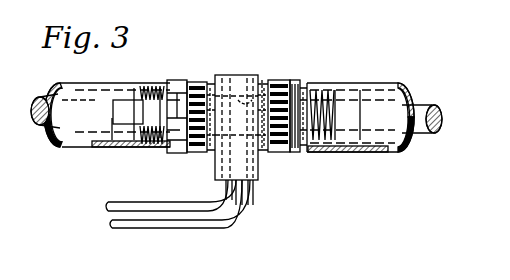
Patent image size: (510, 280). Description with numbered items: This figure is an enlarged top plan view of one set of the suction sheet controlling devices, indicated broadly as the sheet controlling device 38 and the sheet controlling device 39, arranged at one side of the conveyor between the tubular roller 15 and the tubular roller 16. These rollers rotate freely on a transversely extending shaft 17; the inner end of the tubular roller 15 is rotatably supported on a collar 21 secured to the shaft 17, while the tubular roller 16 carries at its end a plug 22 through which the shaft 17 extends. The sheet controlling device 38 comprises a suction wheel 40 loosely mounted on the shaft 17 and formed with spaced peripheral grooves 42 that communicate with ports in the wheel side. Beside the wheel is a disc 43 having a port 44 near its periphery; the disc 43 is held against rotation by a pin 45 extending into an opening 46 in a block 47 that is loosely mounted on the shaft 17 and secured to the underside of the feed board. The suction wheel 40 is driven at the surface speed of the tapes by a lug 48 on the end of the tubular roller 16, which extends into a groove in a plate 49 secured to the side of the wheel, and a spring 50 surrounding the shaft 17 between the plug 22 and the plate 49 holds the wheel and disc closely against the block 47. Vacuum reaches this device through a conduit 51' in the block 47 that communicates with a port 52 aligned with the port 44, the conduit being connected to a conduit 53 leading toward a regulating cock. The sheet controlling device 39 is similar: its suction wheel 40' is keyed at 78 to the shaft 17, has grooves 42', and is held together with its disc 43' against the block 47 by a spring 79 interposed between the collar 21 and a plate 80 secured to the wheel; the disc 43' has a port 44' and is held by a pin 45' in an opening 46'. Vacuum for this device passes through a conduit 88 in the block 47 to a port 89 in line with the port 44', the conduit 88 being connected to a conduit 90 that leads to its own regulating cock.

The tubular roller 15 is at (386, 86).
The tubular roller 16 is at (60, 134).
The shaft 17 is at (420, 112).
The collar 21 is at (330, 114).
The plug 22 is at (128, 128).
The sheet controlling device 38 is at (178, 78).
The sheet controlling device 39 is at (302, 76).
The suction wheel 40 is at (164, 130).
The suction wheel 40' is at (308, 135).
The groove 42 is at (176, 139).
The groove 42' is at (282, 128).
The disc 43 is at (198, 102).
The disc 43' is at (277, 138).
The port 44 is at (234, 111).
The port 44' is at (285, 98).
The pin 45 is at (204, 134).
The pin 45' is at (271, 94).
The opening 46 is at (205, 138).
The opening 46' is at (281, 147).
The block 47 is at (244, 208).
The lug 48 is at (142, 112).
The plate 49 is at (172, 148).
The spring 50 is at (132, 149).
The conduit 51' is at (218, 191).
The port 52 is at (243, 73).
The conduit 53 is at (112, 206).
The key 78 is at (304, 84).
The spring 79 is at (338, 152).
The plate 80 is at (306, 154).
The conduit 88 is at (258, 205).
The port 89 is at (244, 92).
The conduit 90 is at (188, 230).